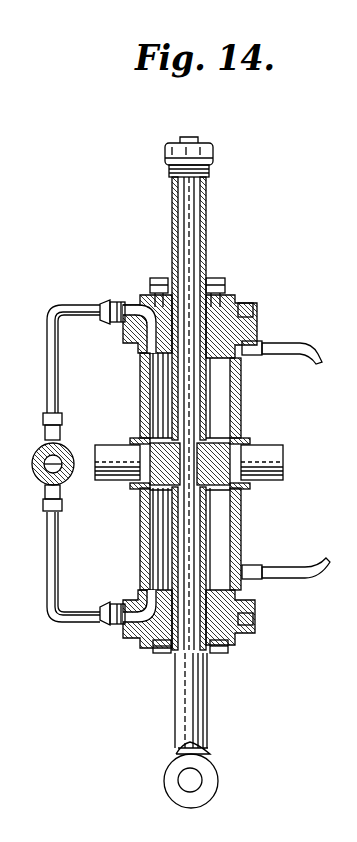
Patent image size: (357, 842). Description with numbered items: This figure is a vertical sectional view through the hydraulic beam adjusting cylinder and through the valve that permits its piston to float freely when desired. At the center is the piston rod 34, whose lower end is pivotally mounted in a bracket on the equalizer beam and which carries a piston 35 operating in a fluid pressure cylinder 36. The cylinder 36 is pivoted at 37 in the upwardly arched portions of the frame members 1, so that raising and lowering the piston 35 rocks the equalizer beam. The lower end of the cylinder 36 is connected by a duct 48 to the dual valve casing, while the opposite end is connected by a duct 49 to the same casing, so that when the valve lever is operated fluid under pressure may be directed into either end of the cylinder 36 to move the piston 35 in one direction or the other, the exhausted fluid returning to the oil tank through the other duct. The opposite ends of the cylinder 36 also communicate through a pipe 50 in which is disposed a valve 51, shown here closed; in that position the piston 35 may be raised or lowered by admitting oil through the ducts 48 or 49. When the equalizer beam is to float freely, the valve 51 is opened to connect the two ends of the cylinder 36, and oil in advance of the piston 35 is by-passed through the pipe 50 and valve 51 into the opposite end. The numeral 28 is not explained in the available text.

The frame members 1 is at (352, 108).
The support rod assembly 28 is at (347, 187).
The piston rod 34 is at (193, 704).
The piston 35 is at (234, 438).
The fluid pressure cylinder 36 is at (243, 520).
The pivot 37 is at (283, 456).
The duct 48 is at (288, 570).
The duct 49 is at (290, 345).
The pipe 50 is at (60, 356).
The valve 51 is at (70, 452).